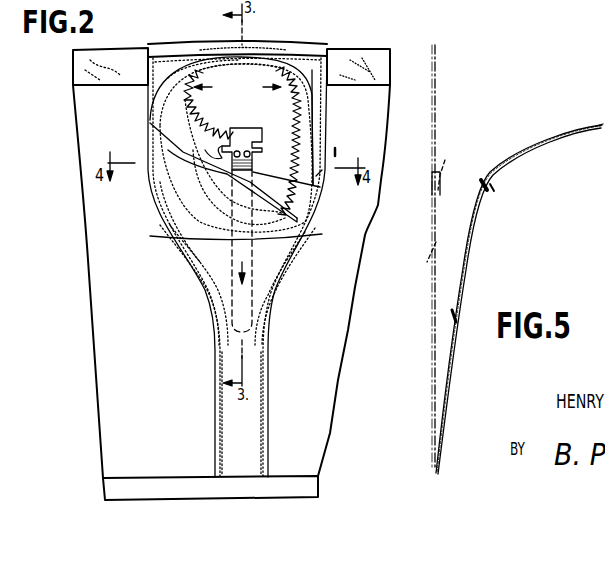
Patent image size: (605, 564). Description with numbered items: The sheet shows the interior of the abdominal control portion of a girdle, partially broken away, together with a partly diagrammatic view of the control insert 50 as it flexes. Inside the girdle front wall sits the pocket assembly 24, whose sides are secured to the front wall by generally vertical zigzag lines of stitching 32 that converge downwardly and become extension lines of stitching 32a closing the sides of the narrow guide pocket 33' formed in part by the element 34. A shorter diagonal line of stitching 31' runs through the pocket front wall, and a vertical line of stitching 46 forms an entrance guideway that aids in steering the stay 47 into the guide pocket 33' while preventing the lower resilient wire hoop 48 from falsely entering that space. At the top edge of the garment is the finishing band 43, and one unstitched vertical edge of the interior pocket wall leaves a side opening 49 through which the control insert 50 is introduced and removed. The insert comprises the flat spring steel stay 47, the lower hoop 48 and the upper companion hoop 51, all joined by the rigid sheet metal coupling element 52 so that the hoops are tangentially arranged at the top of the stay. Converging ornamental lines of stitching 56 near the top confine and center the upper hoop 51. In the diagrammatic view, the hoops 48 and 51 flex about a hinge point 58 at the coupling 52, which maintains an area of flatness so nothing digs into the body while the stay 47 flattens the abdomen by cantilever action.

In FIG. 2, the pocket assembly 24 is at (164, 185).
In FIG. 2, the line of stitching 31' is at (206, 155).
In FIG. 2, the zigzag lines of stitching 32 is at (150, 166).
In FIG. 2, the extension lines of stitching 32a is at (218, 350).
In FIG. 2, the guide pocket 33' is at (281, 251).
In FIG. 5, the element forming the narrow guide pocket 34 is at (604, 85).
In FIG. 2, the finishing band 43 is at (362, 68).
In FIG. 2, the vertical line of stitching 46 is at (210, 152).
In FIG. 2, the stay 47 is at (247, 297).
In FIG. 5, the stay 47 is at (440, 387).
In FIG. 2, the lower resilient wire hoop 48 is at (320, 170).
In FIG. 5, the lower resilient wire hoop 48 is at (470, 242).
In FIG. 2, the side opening 49 is at (335, 150).
In FIG. 2, the control insert 50 is at (204, 114).
In FIG. 2, the upper companion hoop 51 is at (310, 58).
In FIG. 5, the upper companion hoop 51 is at (436, 125).
In FIG. 2, the coupling element 52 is at (247, 130).
In FIG. 5, the coupling element 52 is at (483, 183).
In FIG. 2, the ornamental lines of stitching 56 is at (168, 62).
In FIG. 5, the hinge point 58 is at (490, 186).